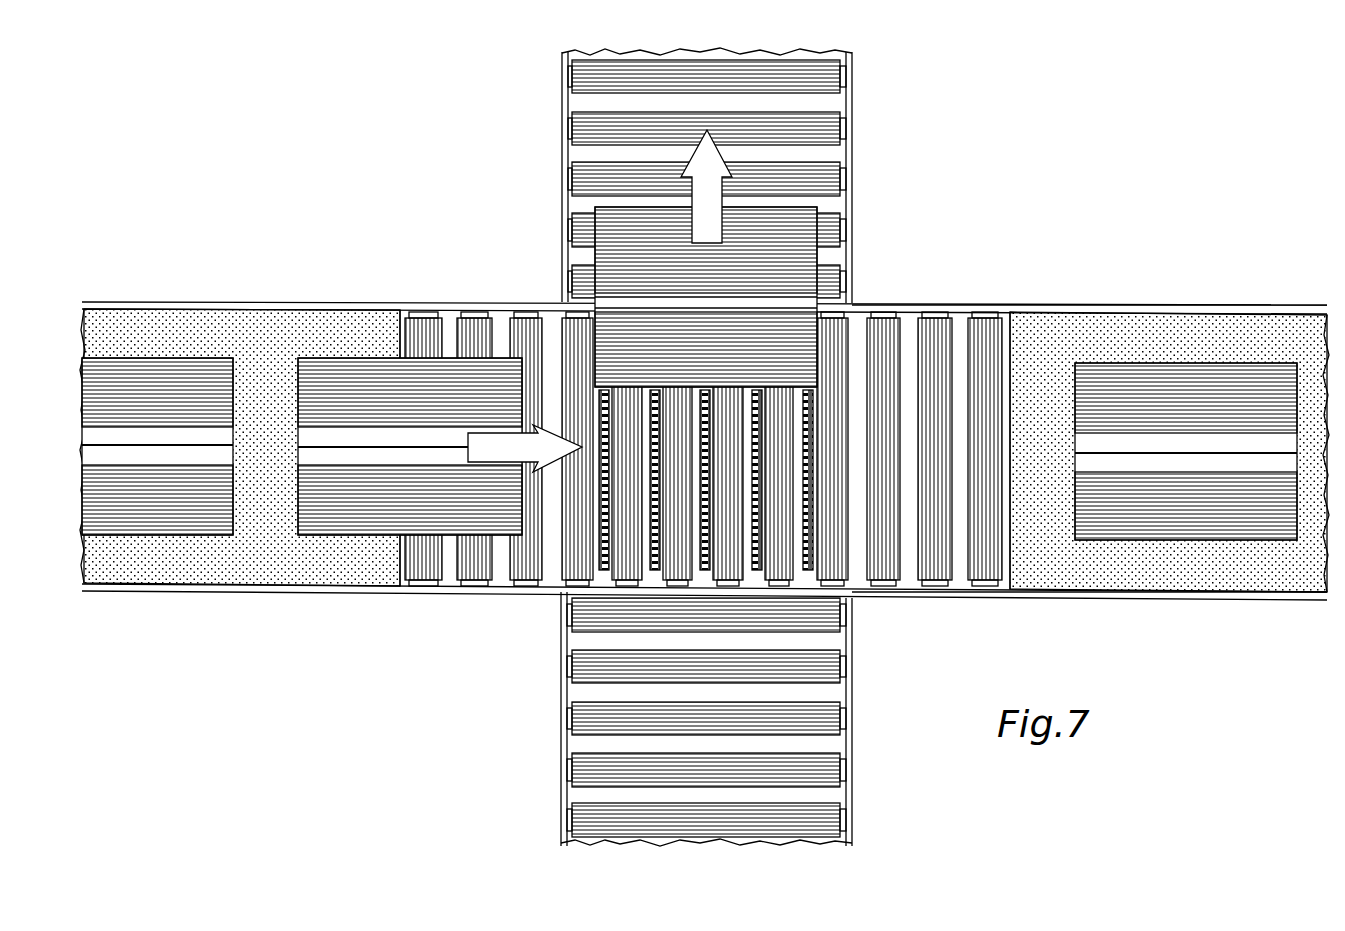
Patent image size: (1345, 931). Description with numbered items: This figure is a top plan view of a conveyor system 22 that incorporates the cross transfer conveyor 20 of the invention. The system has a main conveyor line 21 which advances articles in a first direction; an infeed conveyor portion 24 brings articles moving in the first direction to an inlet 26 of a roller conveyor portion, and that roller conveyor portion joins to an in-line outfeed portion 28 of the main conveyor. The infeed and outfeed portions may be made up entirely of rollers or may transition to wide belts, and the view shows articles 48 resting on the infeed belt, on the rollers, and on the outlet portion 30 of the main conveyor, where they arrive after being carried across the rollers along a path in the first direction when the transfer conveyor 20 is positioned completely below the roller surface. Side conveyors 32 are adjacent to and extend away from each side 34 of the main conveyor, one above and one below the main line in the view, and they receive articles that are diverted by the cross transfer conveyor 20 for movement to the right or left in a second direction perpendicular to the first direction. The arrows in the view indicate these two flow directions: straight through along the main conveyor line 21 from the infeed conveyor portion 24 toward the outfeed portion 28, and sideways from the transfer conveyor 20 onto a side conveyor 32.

The cross transfer conveyor 20 is at (858, 300).
The main conveyor line 21 is at (470, 305).
The conveyor system 22 is at (502, 196).
The infeed conveyor portion 24 is at (251, 356).
The inlet 26 is at (400, 557).
The in-line outfeed portion 28 is at (905, 384).
The outlet portion 30 is at (1010, 560).
The side conveyors 32 is at (853, 147).
The side 34 is at (958, 308).
The article 48 is at (126, 408).